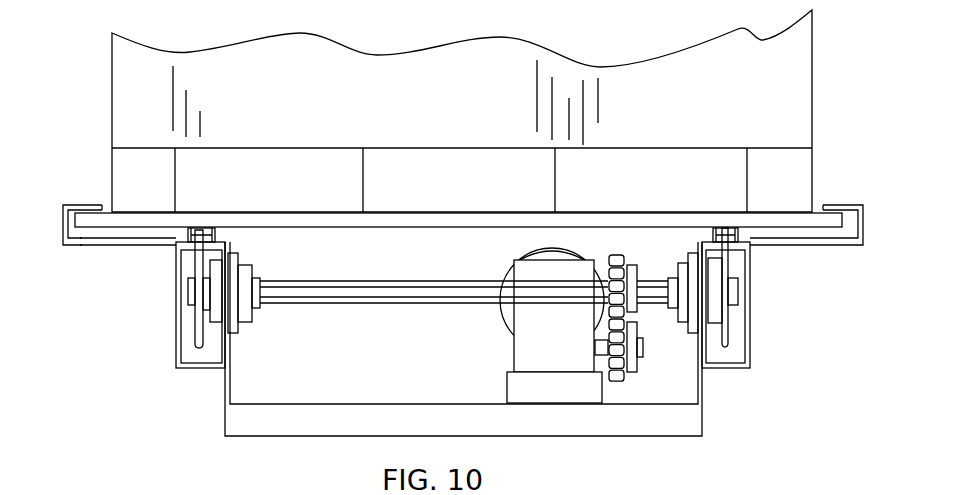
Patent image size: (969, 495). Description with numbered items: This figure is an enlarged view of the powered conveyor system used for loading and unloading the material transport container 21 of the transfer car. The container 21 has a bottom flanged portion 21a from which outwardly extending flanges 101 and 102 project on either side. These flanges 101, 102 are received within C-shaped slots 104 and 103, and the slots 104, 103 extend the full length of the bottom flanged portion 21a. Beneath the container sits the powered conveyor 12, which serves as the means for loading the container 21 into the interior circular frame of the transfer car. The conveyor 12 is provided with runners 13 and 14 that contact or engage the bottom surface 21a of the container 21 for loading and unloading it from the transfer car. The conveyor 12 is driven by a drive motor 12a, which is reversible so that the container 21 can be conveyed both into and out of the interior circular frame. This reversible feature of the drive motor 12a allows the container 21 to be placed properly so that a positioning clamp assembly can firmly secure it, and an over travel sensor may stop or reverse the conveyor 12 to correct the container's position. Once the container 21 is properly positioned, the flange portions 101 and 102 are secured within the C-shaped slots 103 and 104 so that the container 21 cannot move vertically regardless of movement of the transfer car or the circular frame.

The material transport container 21 is at (773, 103).
The bottom flanged portion 21a is at (128, 220).
The outwardly extending flange 101 is at (88, 220).
The outwardly extending flange 102 is at (818, 215).
The C-shaped slot 103 is at (843, 205).
The C-shaped slot 104 is at (64, 205).
The runner 14 is at (198, 258).
The runner 13 is at (727, 252).
The powered conveyor 12 is at (587, 342).
The drive motor 12a is at (500, 330).